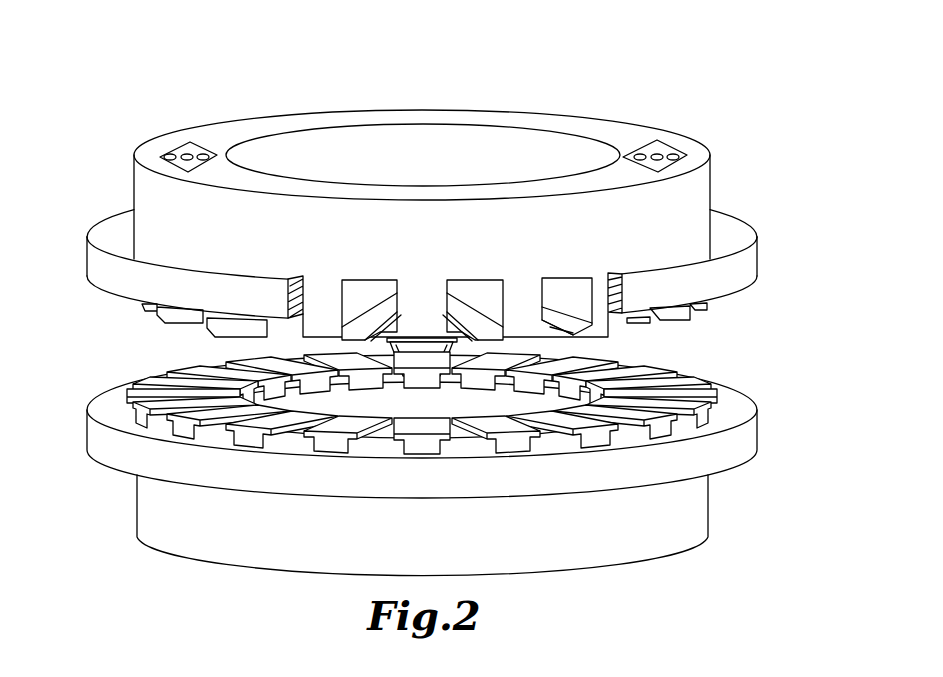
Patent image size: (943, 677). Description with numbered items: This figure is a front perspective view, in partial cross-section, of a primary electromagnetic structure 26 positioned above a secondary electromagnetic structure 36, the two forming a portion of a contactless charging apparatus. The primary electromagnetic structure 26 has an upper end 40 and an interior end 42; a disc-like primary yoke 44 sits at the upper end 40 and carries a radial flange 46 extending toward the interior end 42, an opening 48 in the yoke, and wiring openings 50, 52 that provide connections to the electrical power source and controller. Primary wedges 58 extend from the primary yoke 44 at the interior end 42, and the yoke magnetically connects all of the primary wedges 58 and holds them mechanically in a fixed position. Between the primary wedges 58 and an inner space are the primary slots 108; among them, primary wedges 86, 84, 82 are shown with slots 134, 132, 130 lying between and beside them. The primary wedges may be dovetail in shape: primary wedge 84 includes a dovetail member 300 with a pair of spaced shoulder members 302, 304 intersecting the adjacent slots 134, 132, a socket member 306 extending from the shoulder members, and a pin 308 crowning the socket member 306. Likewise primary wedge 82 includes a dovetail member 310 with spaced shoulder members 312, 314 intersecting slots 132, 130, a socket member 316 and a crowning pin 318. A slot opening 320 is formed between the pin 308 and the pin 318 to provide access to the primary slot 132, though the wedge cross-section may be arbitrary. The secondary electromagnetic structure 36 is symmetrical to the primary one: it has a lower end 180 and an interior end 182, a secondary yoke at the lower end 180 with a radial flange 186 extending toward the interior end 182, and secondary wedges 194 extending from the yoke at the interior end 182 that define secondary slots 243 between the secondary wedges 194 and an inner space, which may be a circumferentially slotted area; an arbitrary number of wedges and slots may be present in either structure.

The primary electromagnetic structure 26 is at (232, 86).
The upper end 40 is at (290, 112).
The primary yoke 44 is at (343, 121).
The opening 48 is at (475, 165).
The wiring opening 50 is at (183, 147).
The wiring opening 52 is at (660, 148).
The radial flange 46 is at (727, 237).
The primary slot 134 is at (377, 280).
The primary slot 132 is at (467, 282).
The primary slot 130 is at (565, 282).
The shoulder member 302 is at (388, 308).
The shoulder member 304 is at (445, 308).
The shoulder member 312 is at (500, 306).
The shoulder member 314 is at (542, 280).
The primary wedge 86 is at (331, 309).
The primary wedge 84 is at (433, 309).
The primary wedge 82 is at (534, 309).
The primary slots 108 is at (200, 332).
The primary wedges 58 is at (683, 320).
The interior end 42 is at (650, 328).
The interior end 182 is at (738, 400).
The radial flange 186 is at (760, 430).
The lower end 180 is at (567, 578).
The secondary electromagnetic structure 36 is at (221, 582).
The secondary wedges 194 is at (680, 428).
The secondary slots 243 is at (200, 430).
The dovetail member 300 is at (395, 352).
The socket member 306 is at (420, 348).
The pin 308 is at (442, 348).
The slot opening 320 is at (484, 350).
The socket member 316 is at (508, 350).
The dovetail member 310 is at (548, 350).
The pin 318 is at (572, 365).